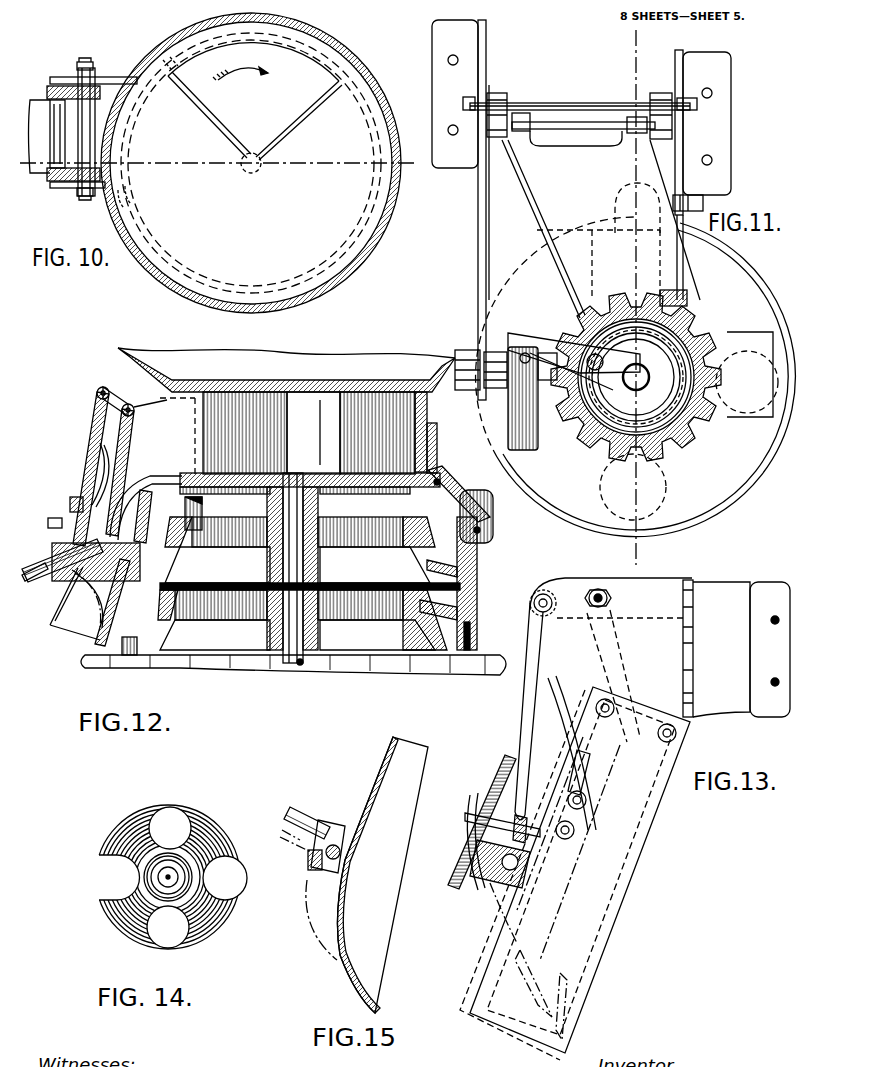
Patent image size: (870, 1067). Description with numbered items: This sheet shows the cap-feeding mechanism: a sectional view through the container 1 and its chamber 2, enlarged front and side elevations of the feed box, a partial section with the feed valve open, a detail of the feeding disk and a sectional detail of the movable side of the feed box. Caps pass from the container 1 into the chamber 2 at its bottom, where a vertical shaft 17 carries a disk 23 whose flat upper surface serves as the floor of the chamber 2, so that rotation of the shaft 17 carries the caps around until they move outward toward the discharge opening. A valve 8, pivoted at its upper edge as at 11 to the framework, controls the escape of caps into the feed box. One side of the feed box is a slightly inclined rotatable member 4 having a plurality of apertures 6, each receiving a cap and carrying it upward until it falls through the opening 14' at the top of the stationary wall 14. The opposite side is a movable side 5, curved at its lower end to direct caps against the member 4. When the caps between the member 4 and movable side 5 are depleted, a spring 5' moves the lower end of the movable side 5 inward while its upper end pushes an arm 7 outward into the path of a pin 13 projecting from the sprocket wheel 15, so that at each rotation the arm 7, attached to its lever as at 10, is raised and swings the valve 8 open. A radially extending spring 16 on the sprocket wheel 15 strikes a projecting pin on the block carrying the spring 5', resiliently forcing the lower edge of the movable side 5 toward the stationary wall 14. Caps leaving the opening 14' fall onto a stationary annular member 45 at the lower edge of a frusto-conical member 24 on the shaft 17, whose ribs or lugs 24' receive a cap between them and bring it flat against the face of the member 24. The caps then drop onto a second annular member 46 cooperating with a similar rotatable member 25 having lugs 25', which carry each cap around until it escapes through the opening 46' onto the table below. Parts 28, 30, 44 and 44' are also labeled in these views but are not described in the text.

In FIG. 12, the container 1 is at (148, 355).
In FIG. 12, the chamber 2 is at (403, 432).
In FIG. 11, the rotatable member 4 is at (738, 470).
In FIG. 12, the rotatable member 4 is at (83, 612).
In FIG. 13, the rotatable member 4 is at (573, 1001).
In FIG. 14, the rotatable member 4 is at (210, 827).
In FIG. 11, the movable side 5 is at (645, 380).
In FIG. 12, the movable side 5 is at (64, 599).
In FIG. 13, the movable side 5 is at (494, 983).
In FIG. 15, the movable side 5 is at (363, 875).
In FIG. 11, the spring 5' is at (506, 402).
In FIG. 13, the spring 5' is at (494, 913).
In FIG. 15, the spring 5' is at (308, 920).
In FIG. 11, the apertures 6 is at (592, 500).
In FIG. 12, the apertures 6 is at (144, 498).
In FIG. 14, the apertures 6 is at (220, 843).
In FIG. 10, the arm 7 is at (41, 112).
In FIG. 11, the arm 7 is at (548, 211).
In FIG. 12, the arm 7 is at (88, 430).
In FIG. 13, the arm 7 is at (530, 703).
In FIG. 10, the valve 8 is at (105, 80).
In FIG. 11, the valve 8 is at (492, 188).
In FIG. 12, the valve 8 is at (132, 435).
In FIG. 13, the valve 8 is at (593, 638).
In FIG. 10, the attachment point 10 is at (52, 180).
In FIG. 11, the attachment point 10 is at (588, 125).
In FIG. 12, the attachment point 10 is at (97, 393).
In FIG. 13, the attachment point 10 is at (543, 594).
In FIG. 10, the pivot 11 is at (88, 66).
In FIG. 11, the pivot 11 is at (545, 106).
In FIG. 12, the pivot 11 is at (125, 404).
In FIG. 13, the pivot 11 is at (600, 589).
In FIG. 11, the pin 13 is at (668, 340).
In FIG. 12, the pin 13 is at (70, 500).
In FIG. 13, the pin 13 is at (497, 780).
In FIG. 12, the stationary wall 14 is at (115, 602).
In FIG. 13, the stationary wall 14 is at (575, 873).
In FIG. 11, the opening 14' is at (628, 337).
In FIG. 11, the sprocket wheel 15 is at (665, 445).
In FIG. 12, the sprocket wheel 15 is at (50, 545).
In FIG. 13, the sprocket wheel 15 is at (472, 905).
In FIG. 11, the spring 16 is at (520, 333).
In FIG. 12, the spring 16 is at (40, 568).
In FIG. 13, the spring 16 is at (470, 795).
In FIG. 12, the vertical shaft 17 is at (297, 664).
In FIG. 12, the disk 23 is at (423, 474).
In FIG. 12, the frusto-conical member 24 is at (490, 516).
In FIG. 12, the ribs or lugs 24' is at (457, 494).
In FIG. 12, the rotatable member 25 is at (461, 608).
In FIG. 12, the lugs 25' is at (487, 633).
In FIG. 12, the column 28 is at (480, 560).
In FIG. 12, the screw 30 is at (480, 530).
In FIG. 12, the valve 44 is at (209, 513).
In FIG. 12, the valve arm 44' is at (162, 518).
In FIG. 12, the stationary annular member 45 is at (457, 582).
In FIG. 12, the second annular member 46 is at (293, 674).
In FIG. 12, the opening 46' is at (157, 665).